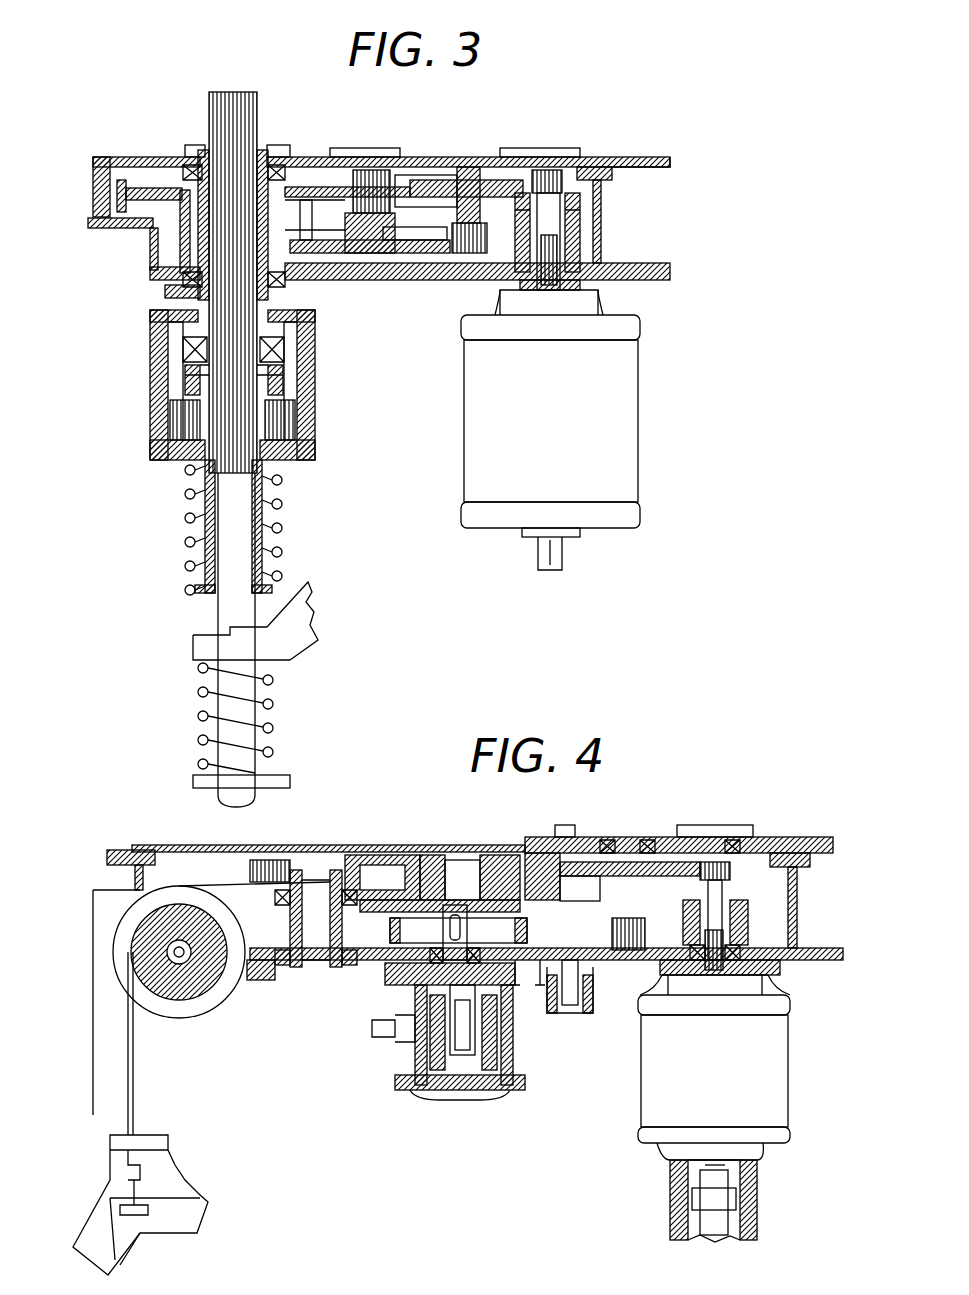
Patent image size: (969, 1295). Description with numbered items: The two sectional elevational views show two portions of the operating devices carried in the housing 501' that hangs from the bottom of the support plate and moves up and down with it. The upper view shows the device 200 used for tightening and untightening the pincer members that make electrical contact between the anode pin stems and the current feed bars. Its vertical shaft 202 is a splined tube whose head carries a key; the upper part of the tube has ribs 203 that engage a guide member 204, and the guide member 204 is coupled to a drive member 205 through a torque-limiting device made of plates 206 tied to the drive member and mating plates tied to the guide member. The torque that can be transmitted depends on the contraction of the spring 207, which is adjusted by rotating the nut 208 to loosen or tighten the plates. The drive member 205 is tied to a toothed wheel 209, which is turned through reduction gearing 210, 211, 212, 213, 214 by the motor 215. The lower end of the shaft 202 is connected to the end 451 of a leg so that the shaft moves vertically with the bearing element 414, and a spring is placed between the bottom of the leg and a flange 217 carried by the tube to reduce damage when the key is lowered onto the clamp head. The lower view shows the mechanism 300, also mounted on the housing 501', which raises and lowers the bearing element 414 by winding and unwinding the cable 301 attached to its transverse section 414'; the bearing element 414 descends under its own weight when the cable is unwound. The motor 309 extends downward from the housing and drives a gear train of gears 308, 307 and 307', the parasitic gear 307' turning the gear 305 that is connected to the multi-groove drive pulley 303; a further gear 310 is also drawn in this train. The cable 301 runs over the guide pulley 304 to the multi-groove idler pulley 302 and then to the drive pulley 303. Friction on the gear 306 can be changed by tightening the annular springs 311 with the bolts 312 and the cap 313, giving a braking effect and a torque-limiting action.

In FIG. 3, the device 200 is at (122, 508).
In FIG. 3, the vertical shaft 202 is at (240, 532).
In FIG. 3, the ribs 203 is at (227, 387).
In FIG. 3, the guide member 204 is at (260, 412).
In FIG. 3, the drive member 205 is at (270, 388).
In FIG. 3, the plates 206 is at (177, 418).
In FIG. 3, the spring 207 is at (273, 500).
In FIG. 3, the nut 208 is at (310, 583).
In FIG. 3, the toothed wheel 209 is at (290, 190).
In FIG. 3, the gearing 210 is at (363, 190).
In FIG. 3, the gearing 211 is at (425, 247).
In FIG. 3, the gearing 212 is at (490, 237).
In FIG. 3, the gearing 213 is at (430, 187).
In FIG. 3, the gearing 214 is at (540, 180).
In FIG. 3, the motor 215 is at (615, 445).
In FIG. 3, the flange 217 is at (205, 781).
In FIG. 3, the end of leg 451 is at (203, 650).
In FIG. 3, the bearing element 414 is at (362, 678).
In FIG. 4, the bearing element 414 is at (189, 1205).
In FIG. 4, the transverse section 414' is at (176, 1238).
In FIG. 3, the housing 501' is at (662, 240).
In FIG. 4, the housing 501' is at (512, 916).
In FIG. 4, the mechanism 300 is at (273, 1010).
In FIG. 4, the cable 301 is at (133, 1090).
In FIG. 4, the multi-groove idler pulley 302 is at (300, 870).
In FIG. 4, the multi-groove drive pulley 303 is at (408, 857).
In FIG. 4, the guide pulley 304 is at (200, 1005).
In FIG. 4, the gear 305 is at (387, 937).
In FIG. 4, the gear 306 is at (522, 900).
In FIG. 4, the gear 307 is at (654, 872).
In FIG. 4, the parasitic gear 307' is at (658, 984).
In FIG. 4, the gear 308 is at (730, 872).
In FIG. 4, the motor 309 is at (773, 1085).
In FIG. 4, the gear 310 is at (552, 850).
In FIG. 4, the annular springs 311 is at (540, 985).
In FIG. 4, the bolts 312 is at (537, 962).
In FIG. 4, the cap 313 is at (573, 1015).